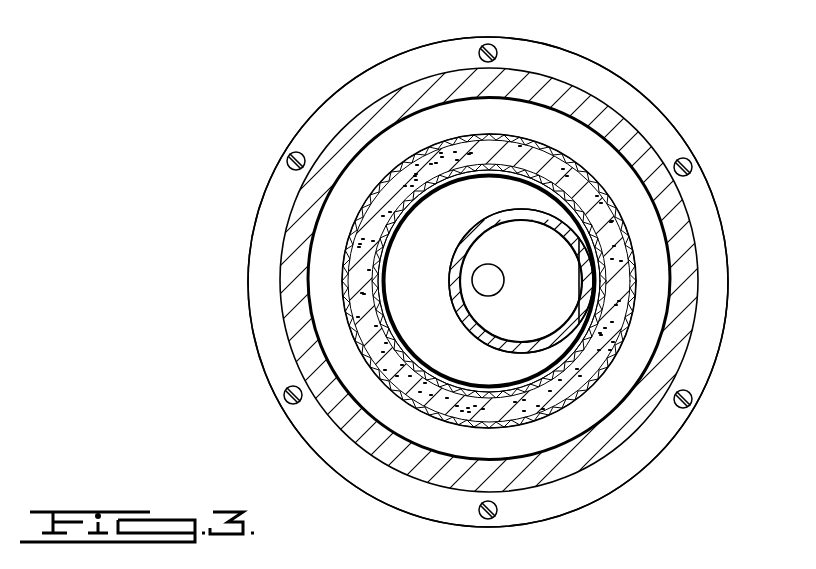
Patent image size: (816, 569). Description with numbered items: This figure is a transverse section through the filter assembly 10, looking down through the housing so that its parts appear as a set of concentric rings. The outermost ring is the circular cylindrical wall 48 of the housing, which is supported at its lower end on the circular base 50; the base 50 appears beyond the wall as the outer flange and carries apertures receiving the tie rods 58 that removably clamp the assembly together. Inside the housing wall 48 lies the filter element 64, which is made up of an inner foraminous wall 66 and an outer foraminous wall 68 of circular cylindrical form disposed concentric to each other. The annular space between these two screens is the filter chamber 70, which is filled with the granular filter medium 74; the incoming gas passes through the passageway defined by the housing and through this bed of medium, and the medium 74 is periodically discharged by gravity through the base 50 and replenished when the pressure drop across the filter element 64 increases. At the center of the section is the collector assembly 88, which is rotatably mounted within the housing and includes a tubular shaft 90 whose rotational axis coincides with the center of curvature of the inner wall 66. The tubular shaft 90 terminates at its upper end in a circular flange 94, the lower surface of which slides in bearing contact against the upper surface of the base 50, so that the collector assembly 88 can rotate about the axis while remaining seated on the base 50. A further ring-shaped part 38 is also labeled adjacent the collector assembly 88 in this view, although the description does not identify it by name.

The filter assembly 10 is at (657, 99).
The inner tube 38 is at (578, 258).
The circular cylindrical wall 48 is at (550, 87).
The circular base 50 is at (712, 227).
The tie rods 58 is at (687, 165).
The filter element 64 is at (344, 294).
The inner foraminous wall 66 is at (437, 188).
The outer foraminous wall 68 is at (450, 133).
The filter chamber 70 is at (370, 320).
The granular filter medium 74 is at (558, 389).
The collector assembly 88 is at (449, 277).
The tubular shaft 90 is at (494, 268).
The circular flange 94 is at (558, 314).